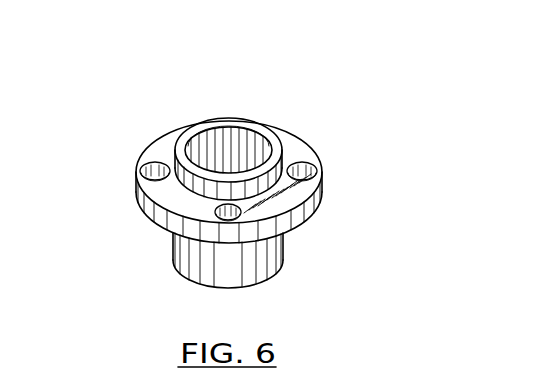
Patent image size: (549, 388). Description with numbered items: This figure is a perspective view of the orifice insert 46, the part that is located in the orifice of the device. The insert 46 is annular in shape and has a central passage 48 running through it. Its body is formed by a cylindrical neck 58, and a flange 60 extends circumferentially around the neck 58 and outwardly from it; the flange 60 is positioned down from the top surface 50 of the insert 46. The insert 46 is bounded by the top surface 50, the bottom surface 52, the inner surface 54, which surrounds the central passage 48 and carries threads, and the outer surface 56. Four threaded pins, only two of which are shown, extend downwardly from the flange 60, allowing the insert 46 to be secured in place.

The orifice insert 46 is at (346, 104).
The central passage 48 is at (230, 118).
The top surface 50 is at (272, 128).
The bottom surface 52 is at (272, 280).
The inner surface 54 is at (212, 142).
The outer surface 56 is at (321, 189).
The cylindrical neck 58 is at (297, 145).
The flange 60 is at (321, 223).